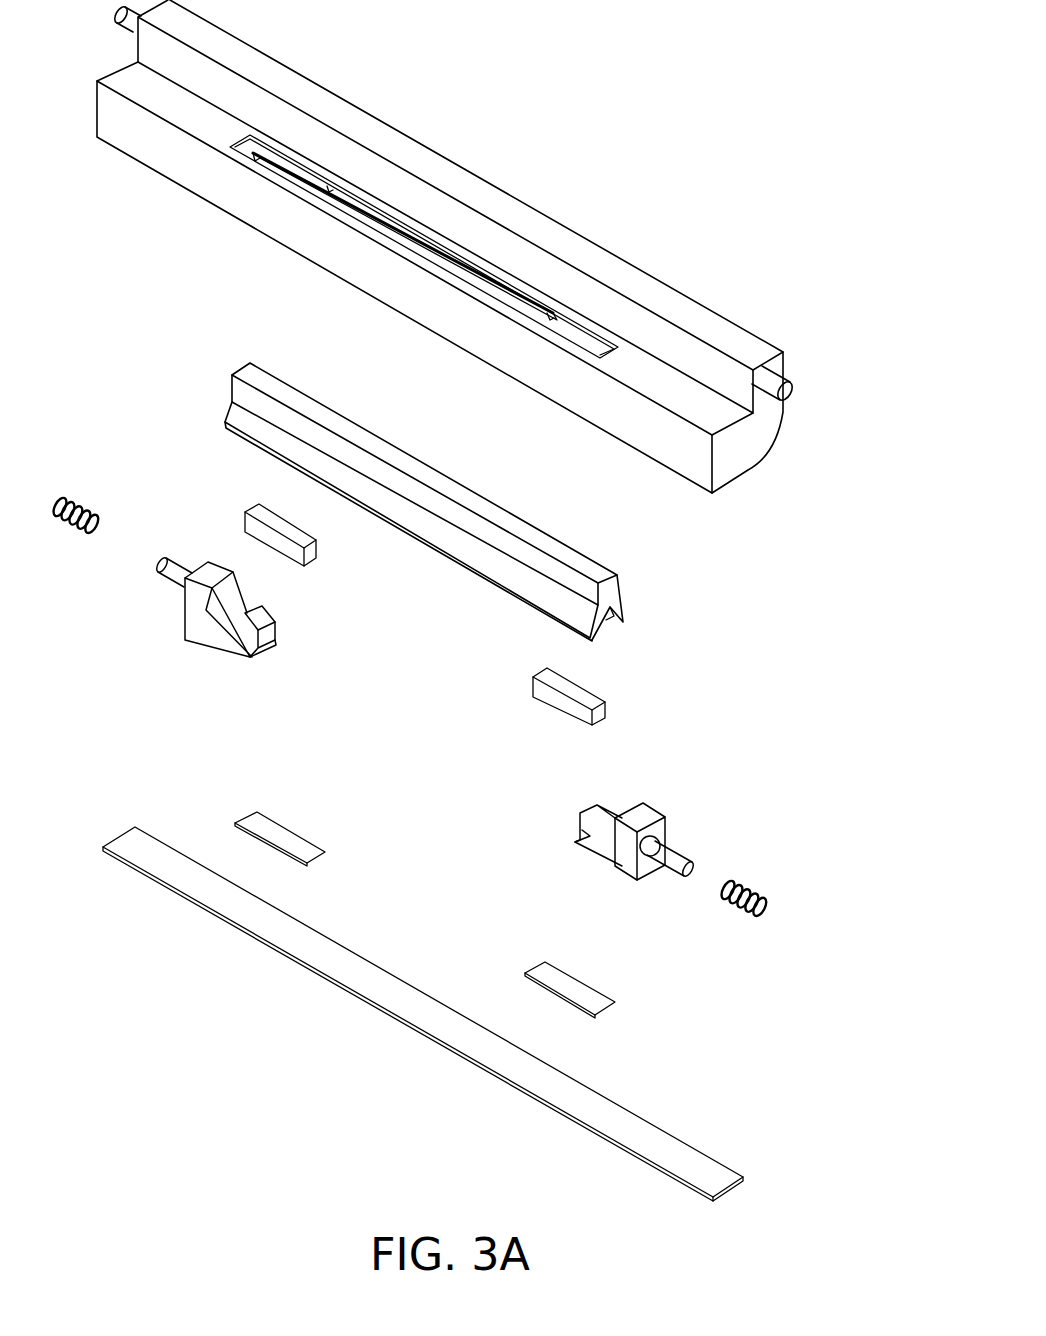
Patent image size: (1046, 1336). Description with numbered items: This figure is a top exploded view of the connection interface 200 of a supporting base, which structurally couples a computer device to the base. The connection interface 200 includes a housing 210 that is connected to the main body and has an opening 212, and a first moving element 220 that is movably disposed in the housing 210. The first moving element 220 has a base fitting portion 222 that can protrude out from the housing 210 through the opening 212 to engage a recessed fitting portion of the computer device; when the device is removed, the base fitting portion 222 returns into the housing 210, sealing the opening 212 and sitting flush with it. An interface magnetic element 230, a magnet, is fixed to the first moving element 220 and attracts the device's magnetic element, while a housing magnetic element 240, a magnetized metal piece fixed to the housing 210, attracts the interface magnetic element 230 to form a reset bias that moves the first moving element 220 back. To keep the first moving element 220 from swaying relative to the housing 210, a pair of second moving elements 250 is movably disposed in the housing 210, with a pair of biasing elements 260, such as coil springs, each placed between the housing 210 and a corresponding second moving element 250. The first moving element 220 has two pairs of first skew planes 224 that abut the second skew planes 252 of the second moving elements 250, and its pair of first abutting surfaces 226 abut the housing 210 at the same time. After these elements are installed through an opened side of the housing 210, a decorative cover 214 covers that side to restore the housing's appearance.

The connection interface 200 is at (666, 176).
The housing 210 is at (497, 203).
The opening 212 is at (386, 220).
The decorative cover 214 is at (643, 1128).
The first moving element 220 is at (634, 554).
The base fitting portion 222 is at (458, 492).
The first skew planes 224 is at (612, 620).
The first abutting surfaces 226 is at (504, 573).
The interface magnetic element 230 is at (267, 512).
The housing magnetic element 240 is at (285, 822).
The second moving elements 250 is at (213, 565).
The second skew planes 252 is at (242, 592).
The biasing elements 260 is at (77, 498).